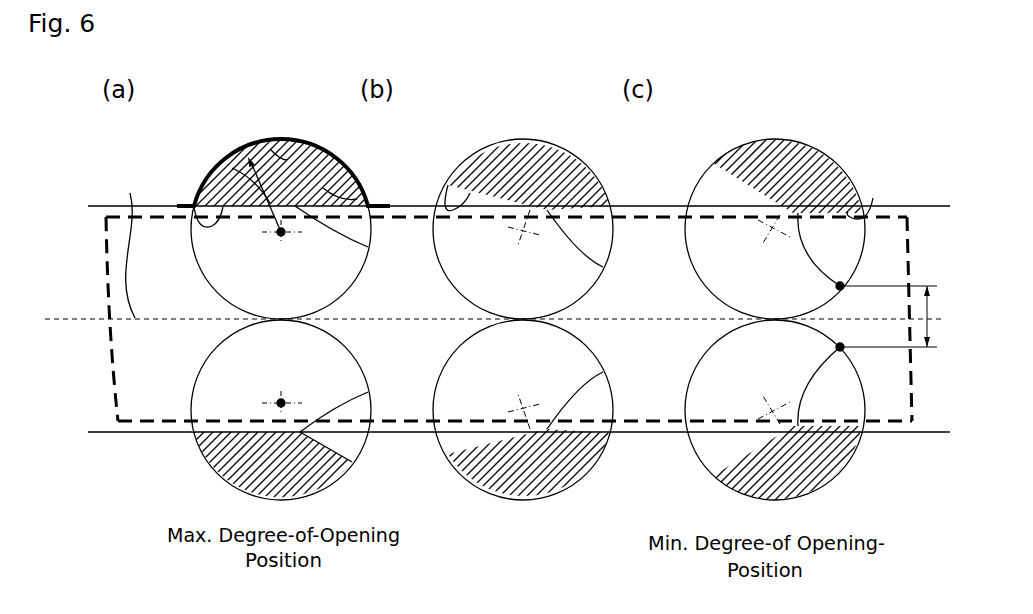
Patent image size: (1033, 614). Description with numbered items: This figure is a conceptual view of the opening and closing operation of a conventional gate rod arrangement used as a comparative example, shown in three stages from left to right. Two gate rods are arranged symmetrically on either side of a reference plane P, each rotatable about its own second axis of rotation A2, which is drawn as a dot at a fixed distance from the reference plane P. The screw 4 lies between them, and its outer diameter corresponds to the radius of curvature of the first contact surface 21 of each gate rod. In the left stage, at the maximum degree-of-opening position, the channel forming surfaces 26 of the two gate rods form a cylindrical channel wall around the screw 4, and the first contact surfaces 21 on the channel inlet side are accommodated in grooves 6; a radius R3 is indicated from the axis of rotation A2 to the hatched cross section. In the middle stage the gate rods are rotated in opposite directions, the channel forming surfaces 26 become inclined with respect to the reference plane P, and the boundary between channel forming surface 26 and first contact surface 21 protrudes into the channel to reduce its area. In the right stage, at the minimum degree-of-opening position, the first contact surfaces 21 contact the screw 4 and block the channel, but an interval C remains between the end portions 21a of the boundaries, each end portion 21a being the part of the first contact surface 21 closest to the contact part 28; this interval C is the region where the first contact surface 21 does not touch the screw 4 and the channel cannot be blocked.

The screw 4 is at (652, 212).
The groove 6 is at (303, 143).
The first contact surface 21 is at (360, 199).
The end portion 21a is at (844, 285).
The channel forming surface 26 is at (190, 205).
The contact part 28 is at (128, 244).
The second axis of rotation A2 is at (279, 234).
The blade radius R3 is at (246, 161).
The reference plane P is at (486, 319).
The interval C is at (892, 316).